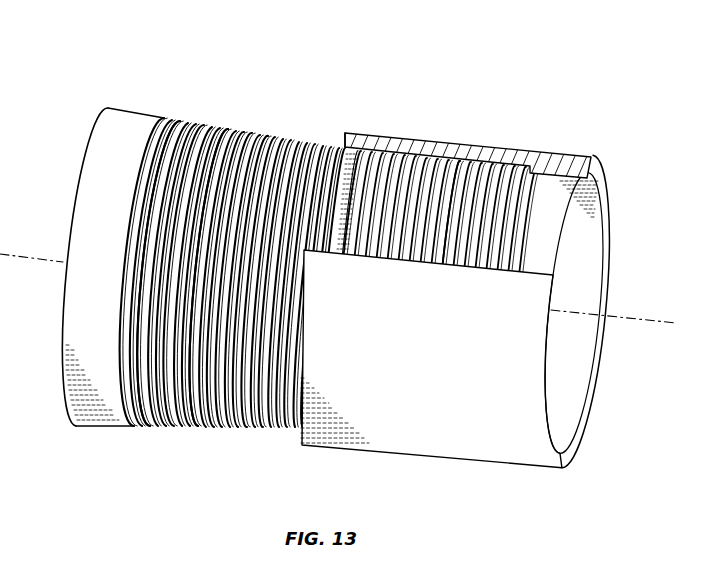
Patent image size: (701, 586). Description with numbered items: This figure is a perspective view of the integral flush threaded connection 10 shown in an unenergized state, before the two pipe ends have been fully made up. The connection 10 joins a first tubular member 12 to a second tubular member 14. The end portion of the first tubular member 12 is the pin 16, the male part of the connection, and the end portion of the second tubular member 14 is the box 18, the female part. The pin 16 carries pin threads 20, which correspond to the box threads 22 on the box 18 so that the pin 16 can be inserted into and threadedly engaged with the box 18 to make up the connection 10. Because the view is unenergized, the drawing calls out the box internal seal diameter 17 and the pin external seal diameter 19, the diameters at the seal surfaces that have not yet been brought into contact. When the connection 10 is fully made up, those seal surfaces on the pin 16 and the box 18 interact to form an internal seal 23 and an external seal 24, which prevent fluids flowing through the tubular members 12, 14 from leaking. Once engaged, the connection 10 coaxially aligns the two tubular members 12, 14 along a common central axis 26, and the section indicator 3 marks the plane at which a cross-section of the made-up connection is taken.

The integral flush threaded connection 10 is at (560, 61).
The first tubular member 12 is at (74, 218).
The second tubular member 14 is at (586, 427).
The pin 16 is at (198, 125).
The box internal seal diameter 17 is at (408, 156).
The box 18 is at (486, 153).
The pin external seal diameter 19 is at (228, 125).
The pin threads 20 is at (175, 78).
The box threads 22 is at (457, 160).
The internal seal 23 is at (348, 146).
The external seal 24 is at (339, 146).
The common central axis 26 is at (639, 318).
The section line 3- 3 is at (243, 131).